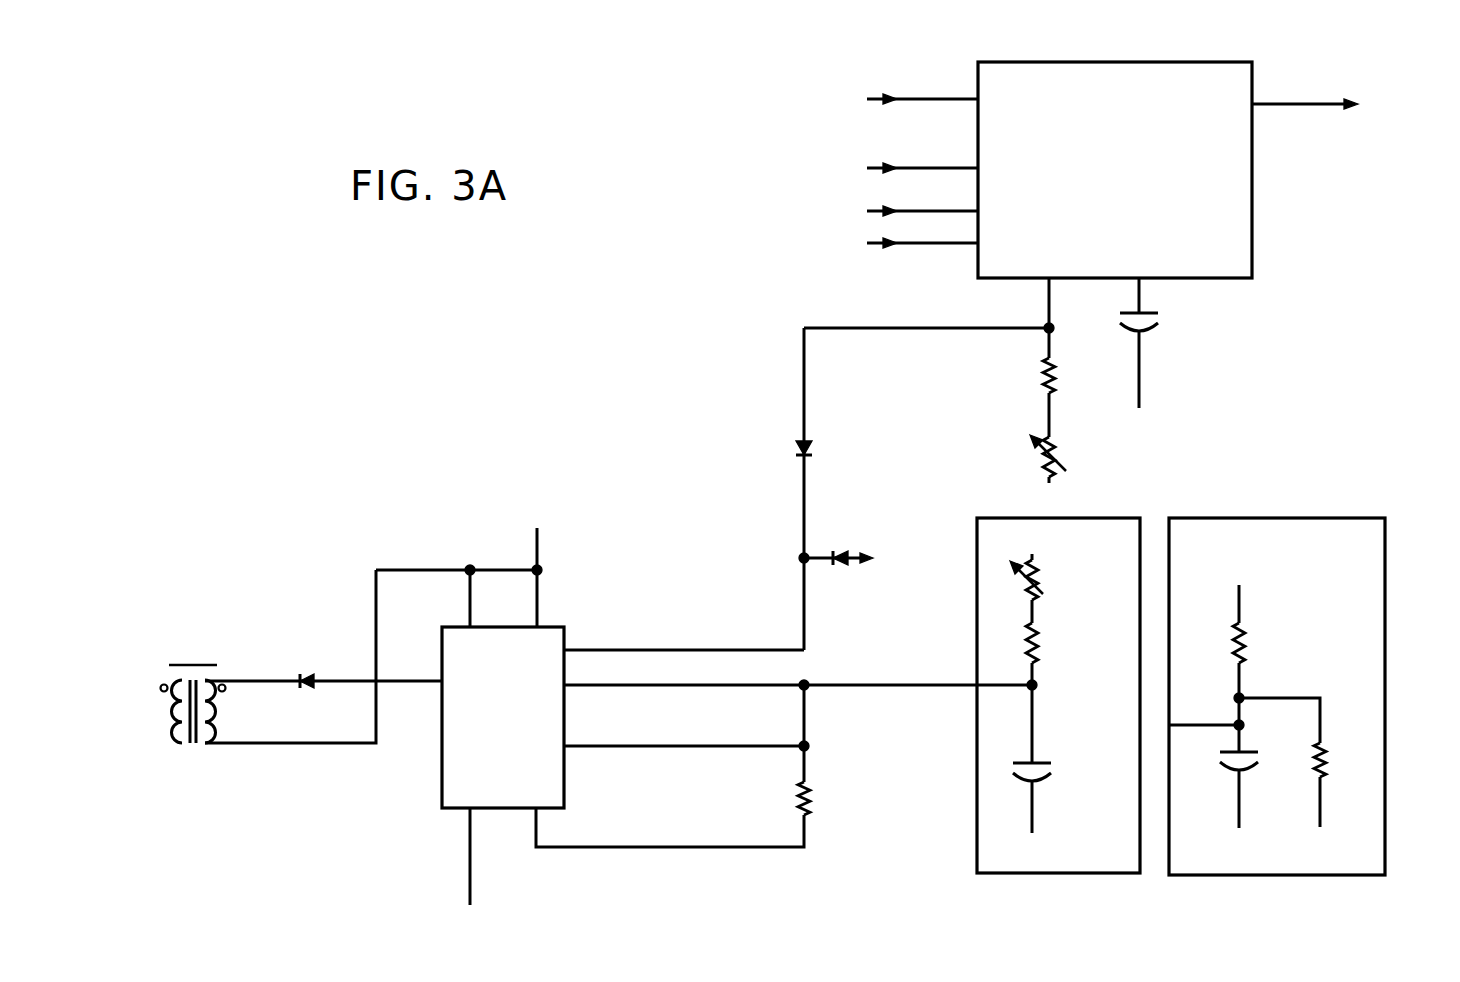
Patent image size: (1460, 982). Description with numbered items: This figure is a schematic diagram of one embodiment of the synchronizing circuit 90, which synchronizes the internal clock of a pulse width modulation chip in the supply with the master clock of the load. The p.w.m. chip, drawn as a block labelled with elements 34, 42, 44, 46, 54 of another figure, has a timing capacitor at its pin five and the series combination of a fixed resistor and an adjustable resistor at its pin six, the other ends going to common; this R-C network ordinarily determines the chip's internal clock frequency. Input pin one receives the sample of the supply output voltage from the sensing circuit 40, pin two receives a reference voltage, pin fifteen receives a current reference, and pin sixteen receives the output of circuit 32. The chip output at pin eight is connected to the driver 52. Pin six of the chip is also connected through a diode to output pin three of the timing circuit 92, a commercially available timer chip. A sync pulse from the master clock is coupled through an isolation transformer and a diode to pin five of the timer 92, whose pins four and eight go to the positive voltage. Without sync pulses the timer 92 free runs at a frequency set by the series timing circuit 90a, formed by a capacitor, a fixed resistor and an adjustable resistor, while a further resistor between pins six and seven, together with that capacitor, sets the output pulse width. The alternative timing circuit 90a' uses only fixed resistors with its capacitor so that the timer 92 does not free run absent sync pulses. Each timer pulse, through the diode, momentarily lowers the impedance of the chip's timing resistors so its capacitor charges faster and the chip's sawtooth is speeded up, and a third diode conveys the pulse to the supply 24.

The synchronizing circuit 90 is at (722, 158).
The timing circuit 92 is at (564, 708).
The series timing circuit 90a is at (1077, 675).
The timing circuit 90a' is at (1294, 676).
The pulse width modulator 34 is at (1212, 154).
The pulse width modulator 42 is at (1212, 154).
The pulse width modulator 44 is at (1212, 154).
The pulse width modulator 46 is at (1212, 154).
The pulse width modulator 54 is at (1106, 62).
The sensing circuit 40 is at (884, 86).
The circuit 32 is at (884, 230).
The driver 52 is at (1340, 106).
The supply 24 is at (871, 559).